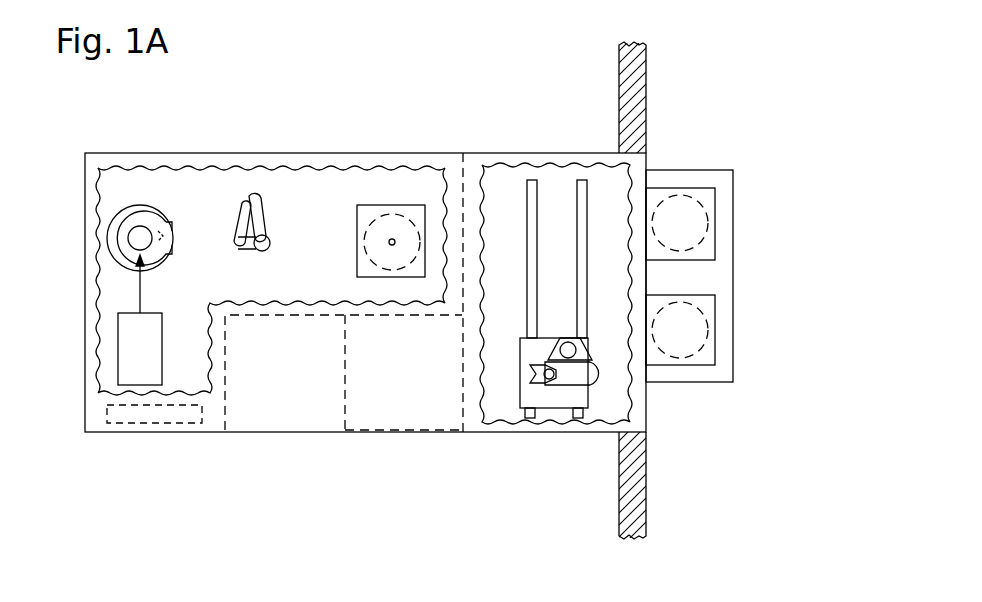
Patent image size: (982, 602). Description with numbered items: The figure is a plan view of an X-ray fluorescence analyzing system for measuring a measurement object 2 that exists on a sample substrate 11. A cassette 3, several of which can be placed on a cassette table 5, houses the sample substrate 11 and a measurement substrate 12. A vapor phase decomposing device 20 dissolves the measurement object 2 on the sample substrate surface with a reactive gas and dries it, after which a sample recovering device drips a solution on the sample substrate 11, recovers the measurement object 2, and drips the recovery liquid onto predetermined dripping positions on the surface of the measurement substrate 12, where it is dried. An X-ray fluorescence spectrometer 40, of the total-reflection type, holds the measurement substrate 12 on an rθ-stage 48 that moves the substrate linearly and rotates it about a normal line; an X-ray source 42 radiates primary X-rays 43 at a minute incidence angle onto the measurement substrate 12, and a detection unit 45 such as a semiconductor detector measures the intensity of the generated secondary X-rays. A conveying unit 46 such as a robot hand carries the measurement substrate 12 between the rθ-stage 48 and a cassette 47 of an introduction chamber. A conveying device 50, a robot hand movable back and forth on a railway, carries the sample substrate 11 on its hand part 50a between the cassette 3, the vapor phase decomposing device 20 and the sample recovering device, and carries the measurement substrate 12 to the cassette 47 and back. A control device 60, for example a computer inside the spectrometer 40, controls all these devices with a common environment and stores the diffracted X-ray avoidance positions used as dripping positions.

The measurement object 2 is at (392, 238).
The cassette 3 is at (713, 203).
The cassette table 5 is at (688, 383).
The sample substrate 11 is at (703, 240).
The measurement substrate 12 is at (132, 212).
The vapor phase decomposing device 20 is at (398, 410).
The X-ray fluorescence spectrometer 40 is at (302, 200).
The X-ray source 42 is at (118, 362).
The primary X-rays 43 is at (108, 298).
The detection unit 45 is at (150, 228).
The conveying unit 46 is at (238, 200).
The cassette of introduction chamber 47 is at (413, 205).
The substrate movement unit (rθ-stage) 48 is at (108, 230).
The conveying device 50 is at (558, 412).
The hand part 50a is at (520, 397).
The control device 60 is at (150, 423).